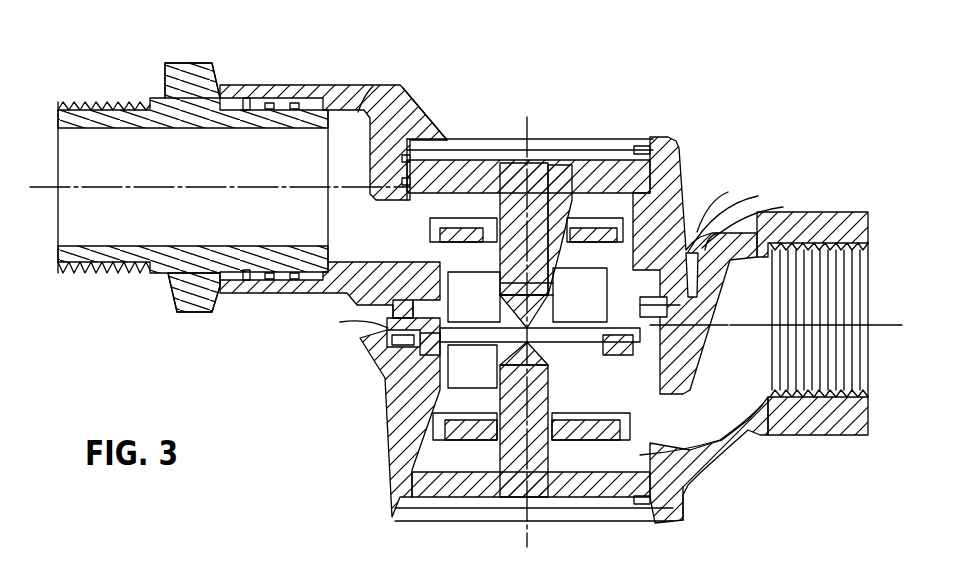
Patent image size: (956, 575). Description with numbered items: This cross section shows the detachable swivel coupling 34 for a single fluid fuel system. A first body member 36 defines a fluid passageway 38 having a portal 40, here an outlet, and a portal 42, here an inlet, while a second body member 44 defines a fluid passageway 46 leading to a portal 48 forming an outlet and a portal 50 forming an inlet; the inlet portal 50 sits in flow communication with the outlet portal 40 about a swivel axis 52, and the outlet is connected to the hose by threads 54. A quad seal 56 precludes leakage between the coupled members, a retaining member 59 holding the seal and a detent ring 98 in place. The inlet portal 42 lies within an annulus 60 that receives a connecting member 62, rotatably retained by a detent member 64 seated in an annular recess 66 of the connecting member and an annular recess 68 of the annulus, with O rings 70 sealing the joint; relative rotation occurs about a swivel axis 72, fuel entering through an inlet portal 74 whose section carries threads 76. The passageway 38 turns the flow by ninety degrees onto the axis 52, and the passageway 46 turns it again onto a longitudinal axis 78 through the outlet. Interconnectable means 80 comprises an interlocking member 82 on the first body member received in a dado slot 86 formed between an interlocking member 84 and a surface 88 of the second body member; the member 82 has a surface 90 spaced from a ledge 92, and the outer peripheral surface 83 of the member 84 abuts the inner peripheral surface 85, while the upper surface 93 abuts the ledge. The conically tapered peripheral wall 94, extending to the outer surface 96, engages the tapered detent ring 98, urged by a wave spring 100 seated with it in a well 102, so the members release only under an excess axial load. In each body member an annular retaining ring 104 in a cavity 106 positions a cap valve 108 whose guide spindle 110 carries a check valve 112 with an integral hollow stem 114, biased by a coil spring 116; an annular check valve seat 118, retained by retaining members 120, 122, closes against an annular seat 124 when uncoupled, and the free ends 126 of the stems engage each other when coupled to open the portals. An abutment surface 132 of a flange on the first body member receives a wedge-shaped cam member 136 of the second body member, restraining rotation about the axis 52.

The detachable swivel coupling 34 is at (720, 103).
The first body member 36 is at (681, 163).
The fluid passageway 38 is at (408, 98).
The portal 40 is at (679, 190).
The portal 42 is at (366, 88).
The second body member 44 is at (706, 479).
The fluid passageway 46 is at (736, 440).
The portal 48 is at (868, 399).
The portal 50 is at (593, 350).
The swivel axis 52 is at (528, 117).
The threads 54 is at (834, 240).
The quad seal 56 is at (623, 358).
The retaining member 59 is at (395, 402).
The annulus 60 is at (281, 85).
The connecting member 62 is at (186, 62).
The detent member 64 is at (246, 98).
The annular recess 66 is at (269, 103).
The annular recess 68 is at (246, 281).
The O rings 70 is at (270, 280).
The swivel axis 72 is at (57, 187).
The inlet portal 74 is at (57, 212).
The threads 76 is at (94, 100).
The longitudinal axis 78 is at (893, 325).
The interconnectable means 80 is at (329, 322).
The interlocking member 82 is at (360, 327).
The outer peripheral surface 83 is at (680, 305).
The interlocking member 84 is at (731, 212).
The inner peripheral surface 85 is at (418, 300).
The dado slot 86 is at (721, 199).
The surface 88 is at (385, 332).
The surface 90 is at (418, 320).
The ledge 92 is at (345, 302).
The upper surface 93 is at (690, 278).
The peripheral wall 94 is at (390, 350).
The outer surface 96 is at (668, 394).
The detent ring 98 is at (692, 329).
The wave spring 100 is at (388, 380).
The well 102 is at (395, 362).
The retaining ring 104 is at (635, 146).
The cavity 106 is at (611, 148).
The cap valve 108 is at (495, 160).
The guide spindle 110 is at (498, 419).
The check valve 112 is at (430, 223).
The hollow stem 114 is at (527, 295).
The coil spring 116 is at (558, 165).
The check valve seat 118 is at (696, 431).
The retaining member 120 is at (445, 246).
The retaining member 122 is at (473, 414).
The annular seat 124 is at (395, 430).
The free end 126 is at (508, 328).
The abutment surface 132 is at (759, 218).
The cam member 136 is at (729, 234).